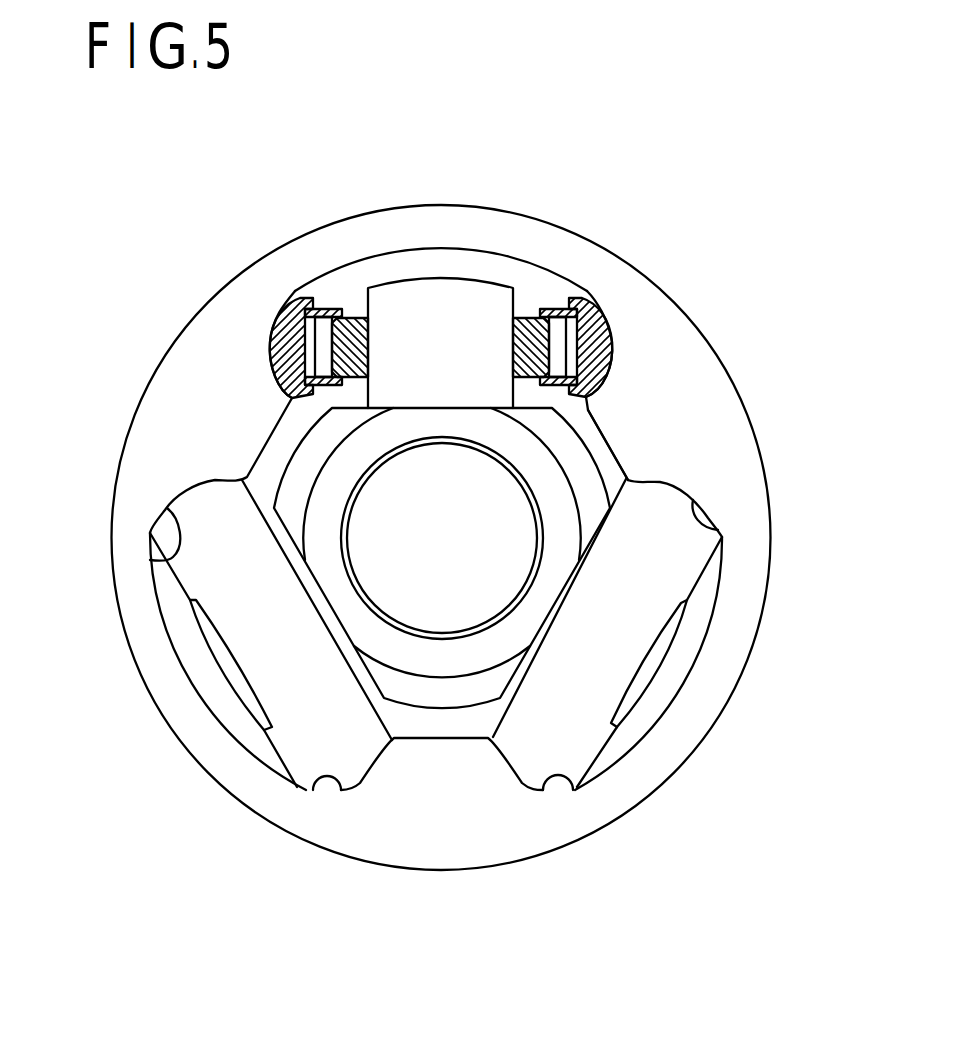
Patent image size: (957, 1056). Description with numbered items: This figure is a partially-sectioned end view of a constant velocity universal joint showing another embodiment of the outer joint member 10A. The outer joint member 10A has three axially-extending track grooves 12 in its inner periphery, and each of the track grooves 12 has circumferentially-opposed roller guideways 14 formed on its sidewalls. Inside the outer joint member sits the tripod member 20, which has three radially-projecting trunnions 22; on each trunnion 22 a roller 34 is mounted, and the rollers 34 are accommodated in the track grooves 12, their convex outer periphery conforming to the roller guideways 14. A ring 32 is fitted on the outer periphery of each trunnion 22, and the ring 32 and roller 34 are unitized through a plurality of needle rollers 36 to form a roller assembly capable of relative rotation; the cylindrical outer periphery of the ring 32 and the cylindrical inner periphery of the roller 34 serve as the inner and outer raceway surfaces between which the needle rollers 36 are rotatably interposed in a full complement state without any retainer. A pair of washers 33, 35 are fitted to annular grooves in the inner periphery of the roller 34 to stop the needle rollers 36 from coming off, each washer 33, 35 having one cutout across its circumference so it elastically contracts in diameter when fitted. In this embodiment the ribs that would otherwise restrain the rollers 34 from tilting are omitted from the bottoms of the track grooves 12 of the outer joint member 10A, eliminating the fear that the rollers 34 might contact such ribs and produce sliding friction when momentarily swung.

The outer joint member 10A is at (166, 356).
The track grooves 12 is at (425, 262).
The roller guideways 14 is at (160, 560).
The tripod member 20 is at (302, 453).
The trunnions 22 is at (480, 308).
The ring 32 is at (342, 304).
The washer 33 is at (547, 290).
The roller 34 is at (594, 330).
The washer 35 is at (578, 415).
The needle rollers 36 is at (318, 333).